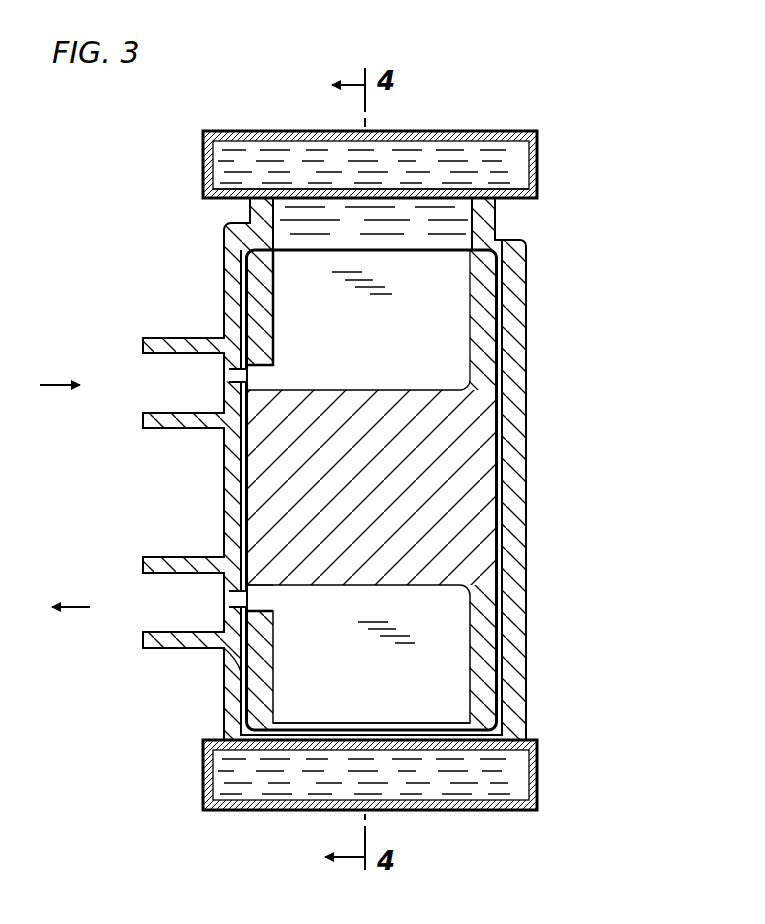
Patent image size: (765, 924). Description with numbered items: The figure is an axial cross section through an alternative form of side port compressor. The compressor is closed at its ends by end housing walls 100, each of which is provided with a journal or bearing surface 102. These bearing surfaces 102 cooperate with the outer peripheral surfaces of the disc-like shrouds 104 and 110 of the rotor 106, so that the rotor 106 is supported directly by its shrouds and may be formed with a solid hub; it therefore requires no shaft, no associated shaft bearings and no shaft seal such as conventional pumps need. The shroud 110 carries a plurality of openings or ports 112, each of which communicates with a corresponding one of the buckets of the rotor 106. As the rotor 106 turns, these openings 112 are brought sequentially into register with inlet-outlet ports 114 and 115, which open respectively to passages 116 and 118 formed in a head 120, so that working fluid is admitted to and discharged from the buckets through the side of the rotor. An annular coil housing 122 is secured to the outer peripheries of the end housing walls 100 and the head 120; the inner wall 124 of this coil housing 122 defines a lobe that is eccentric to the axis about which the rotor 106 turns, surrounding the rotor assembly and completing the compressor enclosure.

The end housing wall 100 is at (514, 438).
The journal or bearing surface 102 is at (477, 241).
The disc-like shroud 104 is at (485, 283).
The rotor 106 is at (385, 371).
The disc-like shroud 110 is at (268, 300).
The opening or port 112 is at (272, 367).
The inlet-outlet port 114 is at (235, 368).
The inlet-outlet port 115 is at (231, 596).
The passage 116 is at (162, 357).
The passage 118 is at (150, 572).
The head 120 is at (226, 652).
The annular coil housing 122 is at (478, 120).
The inner wall 124 is at (442, 192).